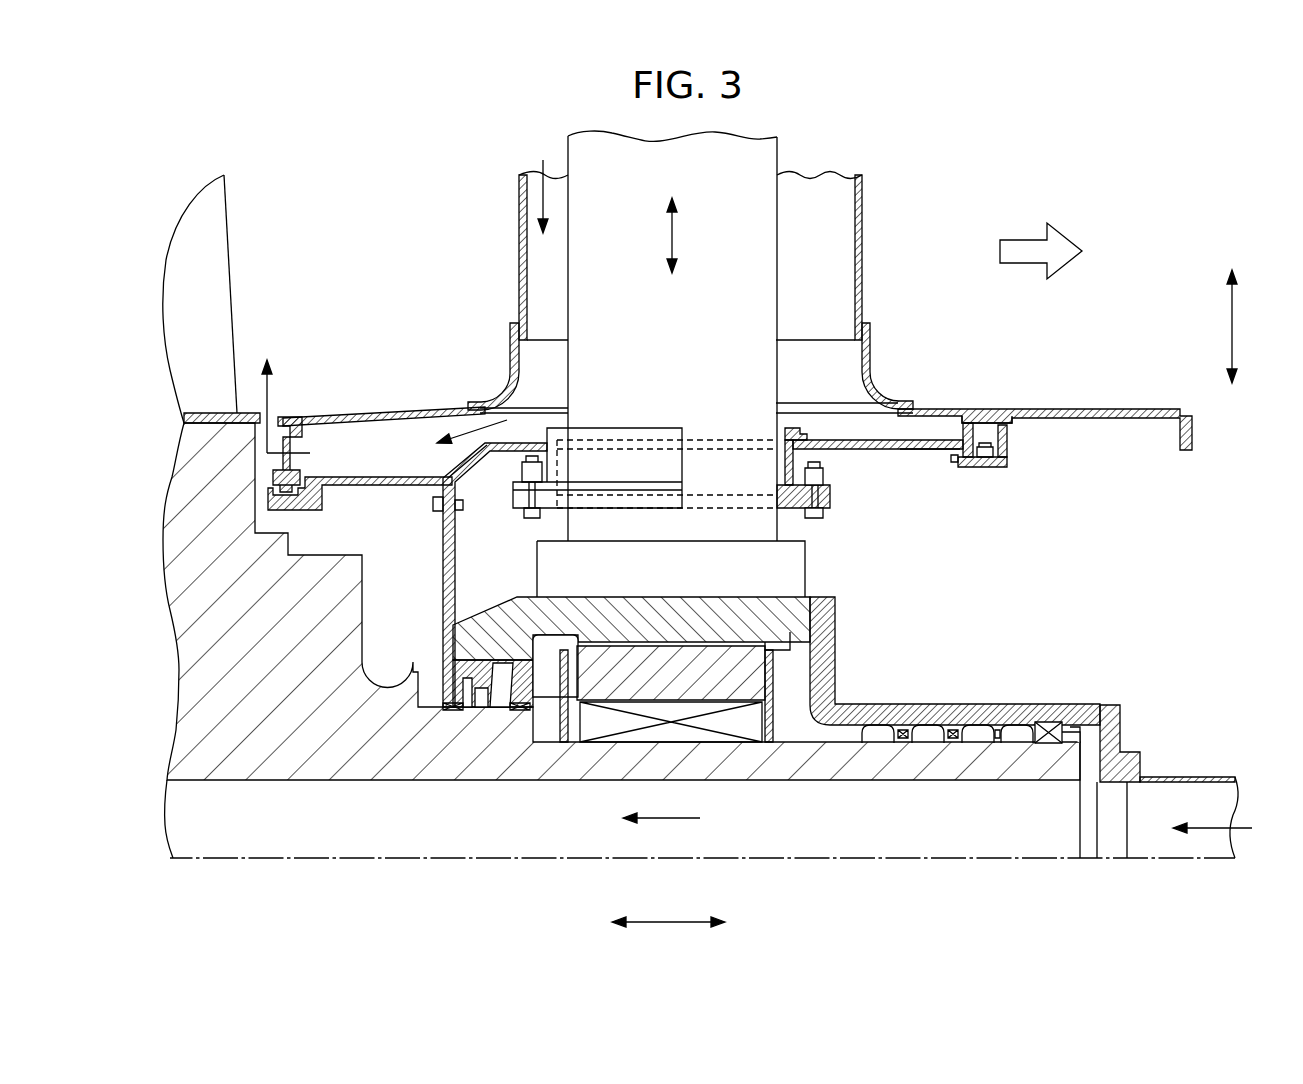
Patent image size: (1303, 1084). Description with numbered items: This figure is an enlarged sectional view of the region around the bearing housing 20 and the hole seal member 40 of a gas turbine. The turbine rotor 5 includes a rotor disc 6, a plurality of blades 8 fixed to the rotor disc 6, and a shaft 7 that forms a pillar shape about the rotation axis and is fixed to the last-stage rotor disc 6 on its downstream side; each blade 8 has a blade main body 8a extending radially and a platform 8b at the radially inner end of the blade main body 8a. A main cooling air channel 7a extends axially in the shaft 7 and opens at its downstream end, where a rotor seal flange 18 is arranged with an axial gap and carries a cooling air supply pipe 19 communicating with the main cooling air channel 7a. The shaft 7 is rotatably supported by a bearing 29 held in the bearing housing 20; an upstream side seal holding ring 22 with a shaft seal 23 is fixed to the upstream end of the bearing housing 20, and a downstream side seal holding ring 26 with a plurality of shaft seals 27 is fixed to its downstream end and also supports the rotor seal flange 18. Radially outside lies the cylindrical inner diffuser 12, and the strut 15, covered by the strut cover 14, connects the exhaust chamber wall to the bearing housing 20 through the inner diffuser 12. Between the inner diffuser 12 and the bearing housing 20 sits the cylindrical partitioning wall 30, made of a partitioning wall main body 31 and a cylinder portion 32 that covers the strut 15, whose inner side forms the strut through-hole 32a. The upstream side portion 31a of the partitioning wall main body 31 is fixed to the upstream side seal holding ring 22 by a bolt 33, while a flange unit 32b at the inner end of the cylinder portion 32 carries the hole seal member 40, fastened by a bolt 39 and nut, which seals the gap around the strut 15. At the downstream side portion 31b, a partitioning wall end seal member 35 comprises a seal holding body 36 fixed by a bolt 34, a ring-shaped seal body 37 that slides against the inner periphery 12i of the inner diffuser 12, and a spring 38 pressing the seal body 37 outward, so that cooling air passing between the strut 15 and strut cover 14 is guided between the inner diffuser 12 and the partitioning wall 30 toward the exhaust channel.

The turbine rotor 5 is at (645, 689).
The rotor disc 6 is at (269, 740).
The shaft 7 is at (375, 738).
The main cooling air channel 7a is at (877, 813).
The blade 8 is at (243, 299).
The blade main body 8a is at (198, 258).
The platform 8b is at (205, 417).
The inner diffuser 12 is at (353, 413).
The inner periphery of the inner diffuser 12i is at (993, 423).
The strut cover 14 is at (517, 227).
The strut 15 is at (597, 287).
The rotor seal flange 18 is at (1108, 707).
The cooling air supply pipe 19 is at (1193, 777).
The bearing housing 20 is at (730, 620).
The upstream side seal holding ring 22 is at (443, 650).
The shaft seal 23 is at (442, 712).
The downstream side seal holding ring 26 is at (1017, 715).
The shaft seal 27 is at (1050, 743).
The bearing 29 is at (612, 718).
The partitioning wall 30 is at (621, 447).
The partitioning wall main body 31 is at (621, 507).
The upstream side portion 31a is at (460, 467).
The downstream side portion 31b is at (937, 448).
The cylinder portion 32 is at (725, 347).
The strut through-hole 32a is at (780, 440).
The flange unit 32b is at (828, 485).
The bolt 33 is at (433, 505).
The bolt 34 is at (952, 462).
The partitioning wall end seal member 35 is at (1047, 482).
The seal holding body 36 is at (992, 462).
The seal body 37 is at (988, 435).
The spring 38 is at (993, 452).
The bolt 39 is at (530, 467).
The hole seal member 40 is at (825, 500).